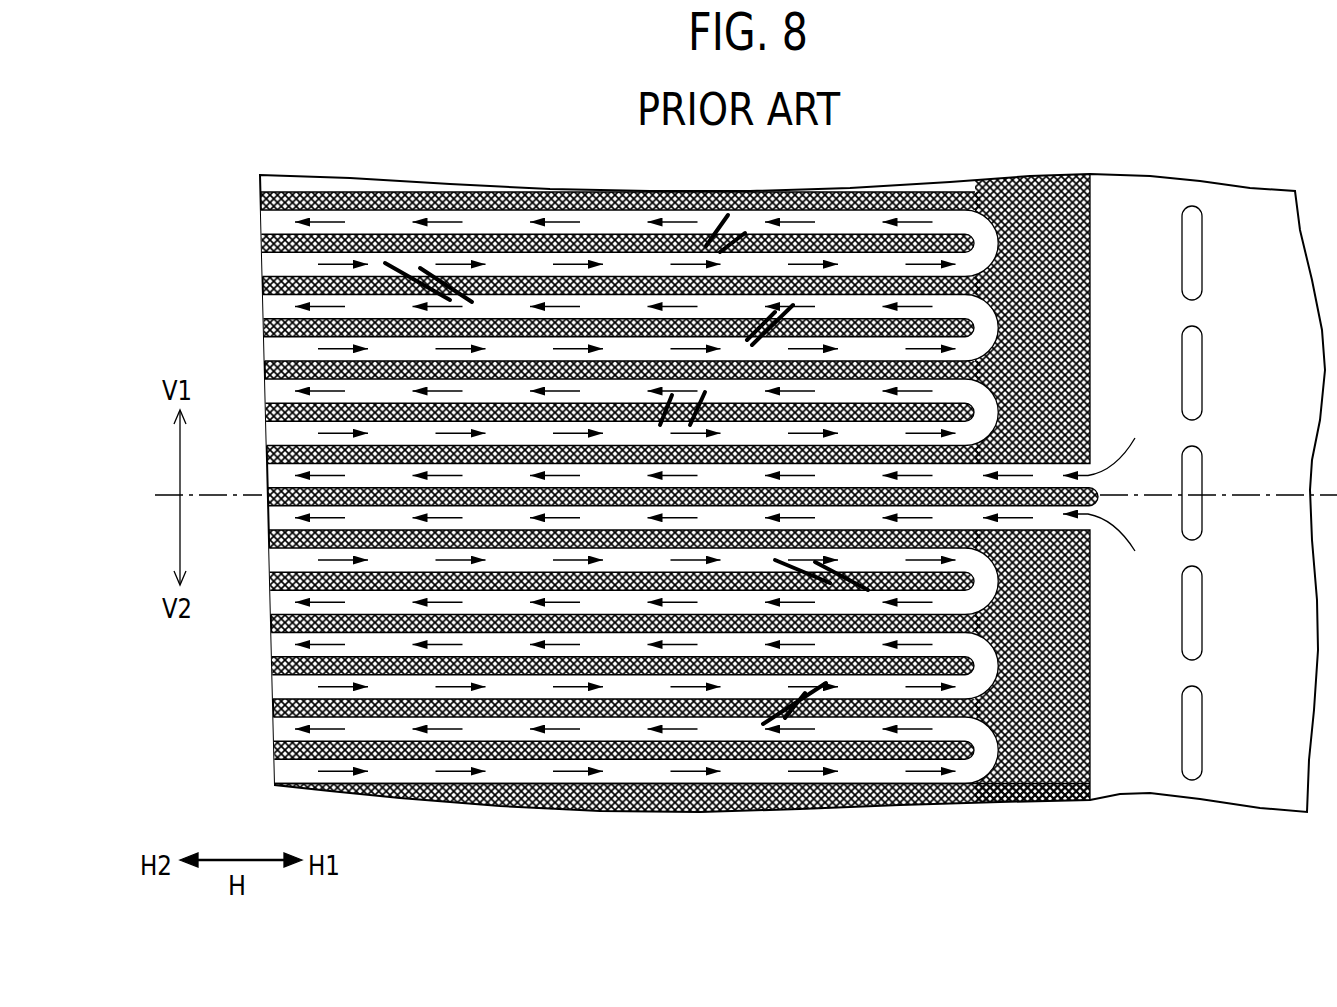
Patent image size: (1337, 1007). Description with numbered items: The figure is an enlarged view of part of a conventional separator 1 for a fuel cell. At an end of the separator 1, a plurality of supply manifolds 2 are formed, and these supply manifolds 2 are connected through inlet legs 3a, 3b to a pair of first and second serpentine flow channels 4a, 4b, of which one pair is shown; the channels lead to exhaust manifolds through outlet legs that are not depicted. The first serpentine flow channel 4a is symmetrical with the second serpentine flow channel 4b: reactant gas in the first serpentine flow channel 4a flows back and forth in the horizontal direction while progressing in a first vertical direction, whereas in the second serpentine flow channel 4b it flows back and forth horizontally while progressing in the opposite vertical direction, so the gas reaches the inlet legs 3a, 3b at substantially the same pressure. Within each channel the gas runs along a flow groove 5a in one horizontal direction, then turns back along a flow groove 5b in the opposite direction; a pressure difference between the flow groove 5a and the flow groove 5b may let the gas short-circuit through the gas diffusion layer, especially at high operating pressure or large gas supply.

The separator 1 is at (1125, 125).
The supply manifold 2 is at (1195, 390).
The inlet leg 3a is at (1047, 473).
The inlet leg 3b is at (1048, 520).
The first serpentine flow channel 4a is at (977, 177).
The second serpentine flow channel 4b is at (639, 815).
The flow groove 5a is at (940, 345).
The flow groove 5b is at (943, 303).